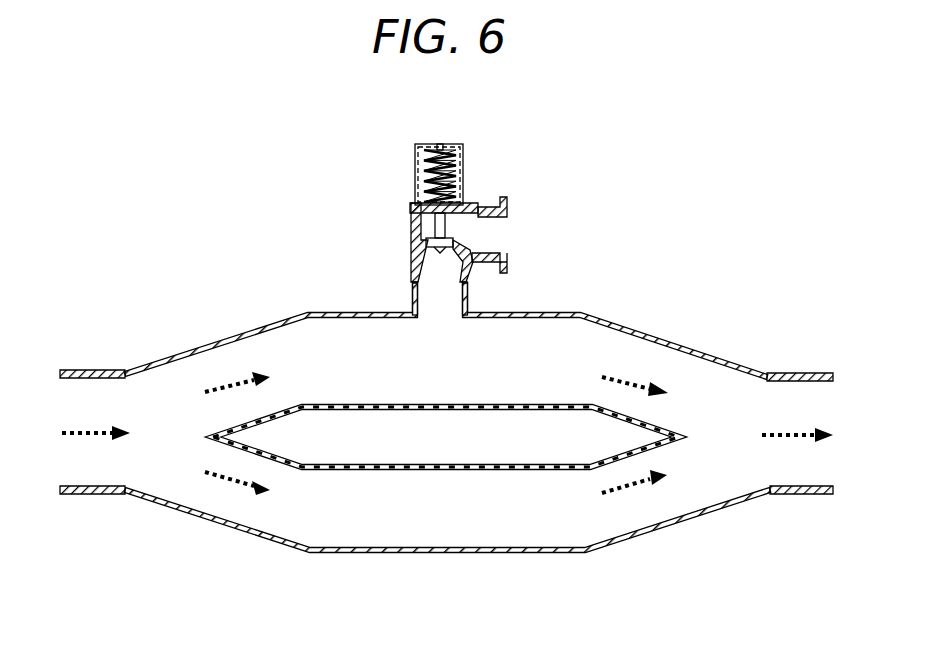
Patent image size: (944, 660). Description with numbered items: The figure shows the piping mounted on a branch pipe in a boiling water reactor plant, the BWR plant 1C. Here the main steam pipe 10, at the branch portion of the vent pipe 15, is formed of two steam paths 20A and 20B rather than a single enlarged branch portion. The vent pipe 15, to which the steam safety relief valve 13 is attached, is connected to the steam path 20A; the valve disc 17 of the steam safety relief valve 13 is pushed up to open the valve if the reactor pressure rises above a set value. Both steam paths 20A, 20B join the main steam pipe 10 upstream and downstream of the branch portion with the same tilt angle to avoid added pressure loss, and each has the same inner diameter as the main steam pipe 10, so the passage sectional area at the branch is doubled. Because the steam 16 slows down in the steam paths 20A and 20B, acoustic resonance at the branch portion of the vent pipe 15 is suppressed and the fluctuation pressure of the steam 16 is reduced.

The BWR plant 1C is at (684, 262).
The main steam pipe 10 is at (95, 497).
The steam safety relief valve 13 is at (463, 155).
The vent pipe 15 is at (413, 300).
The steam 16 is at (627, 487).
The valve disc 17 is at (410, 232).
The steam path 20A is at (542, 315).
The steam path 20B is at (468, 553).